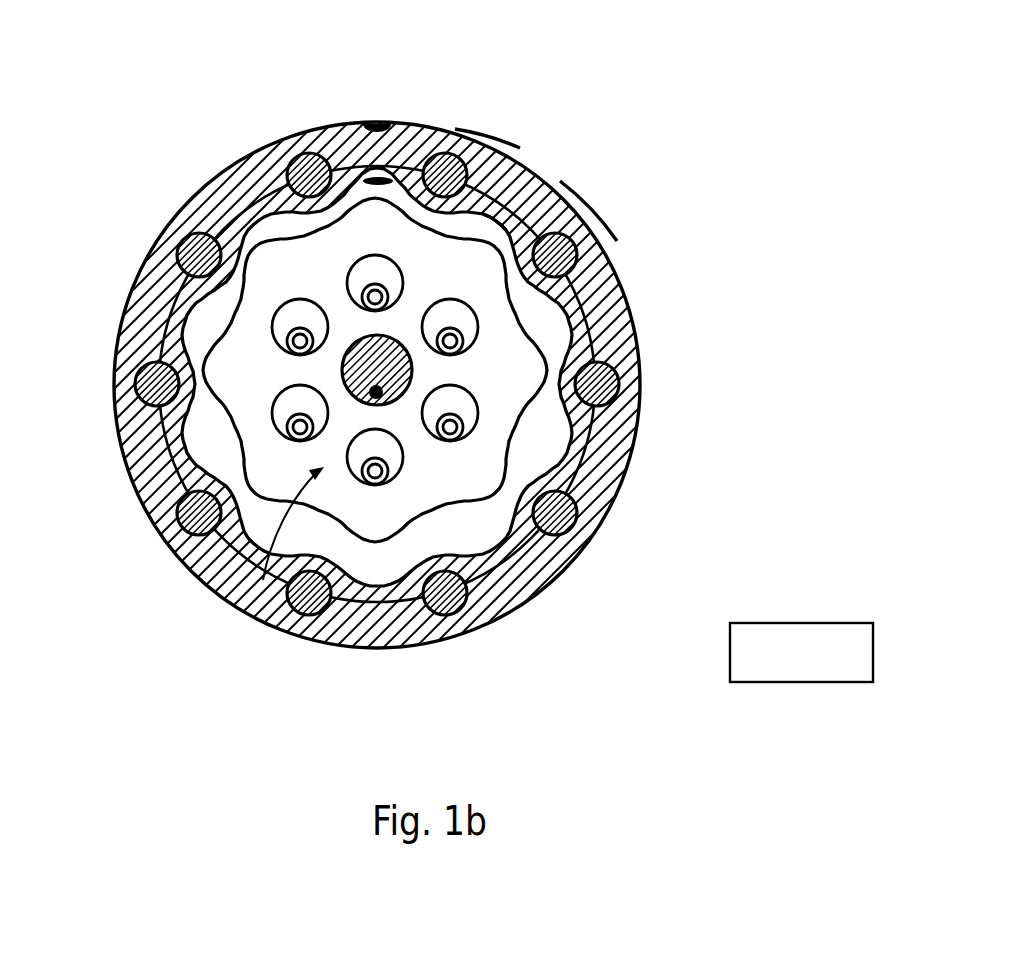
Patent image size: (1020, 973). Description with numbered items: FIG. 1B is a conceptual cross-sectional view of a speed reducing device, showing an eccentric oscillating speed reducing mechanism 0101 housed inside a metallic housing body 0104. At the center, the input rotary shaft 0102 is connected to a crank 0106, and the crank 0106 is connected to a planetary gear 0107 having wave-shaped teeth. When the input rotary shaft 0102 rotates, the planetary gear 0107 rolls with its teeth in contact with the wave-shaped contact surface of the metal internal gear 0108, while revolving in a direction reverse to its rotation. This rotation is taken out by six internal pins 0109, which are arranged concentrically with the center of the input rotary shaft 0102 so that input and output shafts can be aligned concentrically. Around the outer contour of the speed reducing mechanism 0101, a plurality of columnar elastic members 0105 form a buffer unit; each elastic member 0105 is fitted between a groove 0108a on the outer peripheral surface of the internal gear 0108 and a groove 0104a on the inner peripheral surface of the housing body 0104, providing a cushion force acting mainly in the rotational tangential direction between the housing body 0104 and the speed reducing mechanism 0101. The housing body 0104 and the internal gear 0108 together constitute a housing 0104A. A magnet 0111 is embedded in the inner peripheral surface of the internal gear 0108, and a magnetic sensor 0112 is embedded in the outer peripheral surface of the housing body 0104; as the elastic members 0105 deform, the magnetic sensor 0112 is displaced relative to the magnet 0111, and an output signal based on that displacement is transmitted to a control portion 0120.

The speed reducing mechanism 0101 is at (263, 580).
The input rotary shaft 0102 is at (377, 394).
The housing body 0104 is at (622, 330).
The groove 0104a is at (472, 168).
The housing 0104A is at (600, 233).
The elastic member 0105 is at (445, 168).
The crank 0106 is at (365, 355).
The planetary gear 0107 is at (240, 365).
The internal gear 0108 is at (403, 173).
The groove 0108a is at (490, 197).
The internal pin 0109 is at (463, 425).
The magnet 0111 is at (373, 177).
The magnetic sensor 0112 is at (380, 124).
The control portion 0120 is at (808, 633).